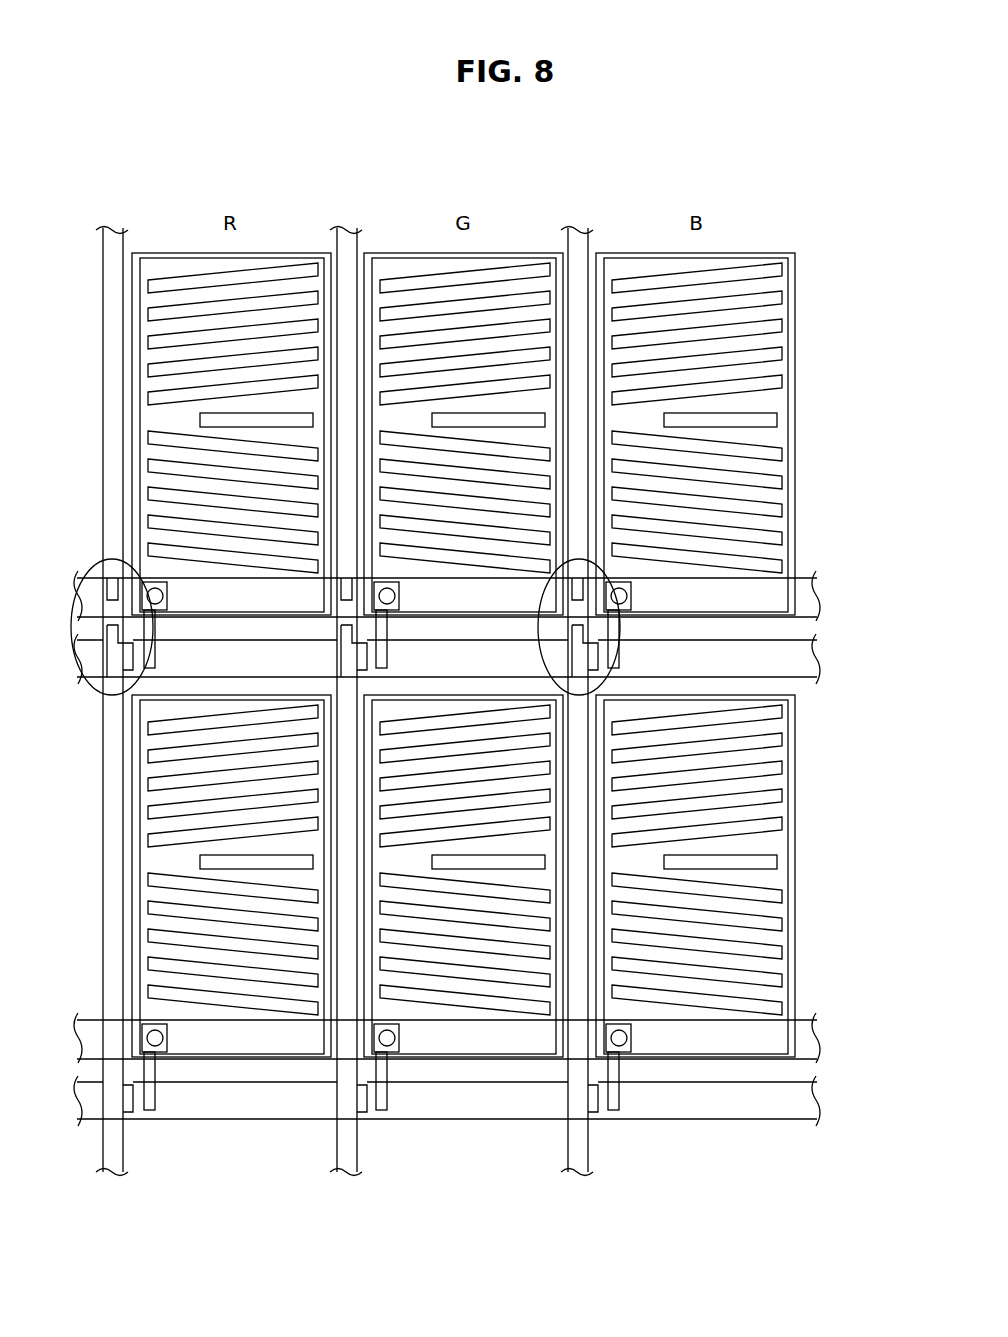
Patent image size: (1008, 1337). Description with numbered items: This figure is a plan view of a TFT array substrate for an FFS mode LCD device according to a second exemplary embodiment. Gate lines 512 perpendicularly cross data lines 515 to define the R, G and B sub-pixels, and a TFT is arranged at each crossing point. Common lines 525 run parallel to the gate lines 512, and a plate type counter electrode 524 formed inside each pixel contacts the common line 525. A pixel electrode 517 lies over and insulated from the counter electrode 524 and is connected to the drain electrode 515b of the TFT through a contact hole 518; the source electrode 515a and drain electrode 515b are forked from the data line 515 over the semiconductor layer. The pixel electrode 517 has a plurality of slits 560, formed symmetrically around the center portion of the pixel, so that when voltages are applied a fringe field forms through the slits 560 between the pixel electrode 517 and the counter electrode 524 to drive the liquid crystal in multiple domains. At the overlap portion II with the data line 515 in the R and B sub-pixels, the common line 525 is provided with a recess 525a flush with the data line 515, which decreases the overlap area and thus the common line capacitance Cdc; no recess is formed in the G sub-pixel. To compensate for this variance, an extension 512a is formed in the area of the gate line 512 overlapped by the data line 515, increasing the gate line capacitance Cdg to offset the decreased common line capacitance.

The data line 515 is at (579, 228).
The common line 525 is at (817, 598).
The gate line 512 is at (817, 660).
The counter electrode 524 is at (795, 445).
The slit 560 is at (773, 353).
The pixel electrode 517 is at (778, 419).
The drain electrode 515b is at (632, 595).
The contact hole 518 is at (613, 628).
The source electrode 515a is at (590, 657).
The extension 512a is at (113, 633).
The recess 525a is at (90, 687).
The overlap portion II is at (550, 575).